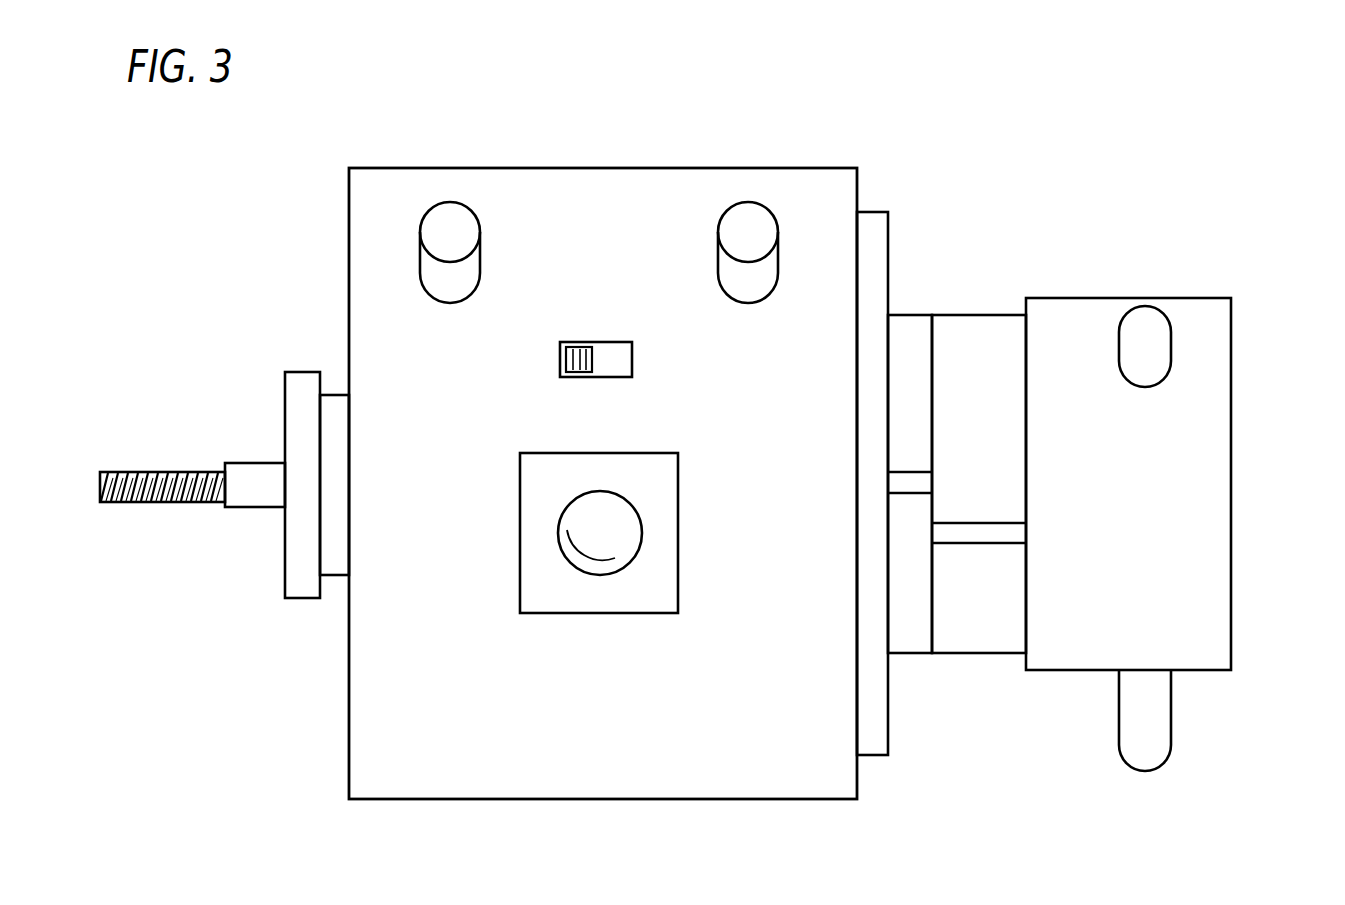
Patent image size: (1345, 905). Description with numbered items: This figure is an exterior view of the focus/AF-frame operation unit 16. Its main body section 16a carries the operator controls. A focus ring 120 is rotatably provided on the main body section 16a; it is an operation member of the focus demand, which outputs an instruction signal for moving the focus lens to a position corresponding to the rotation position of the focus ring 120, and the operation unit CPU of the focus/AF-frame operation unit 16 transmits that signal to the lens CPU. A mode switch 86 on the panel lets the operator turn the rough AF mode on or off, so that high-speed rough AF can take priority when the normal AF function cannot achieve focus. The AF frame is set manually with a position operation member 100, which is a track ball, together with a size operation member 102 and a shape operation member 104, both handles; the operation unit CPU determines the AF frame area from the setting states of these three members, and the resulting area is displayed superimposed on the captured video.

The focus/AF-frame operation unit 16 is at (1019, 163).
The main body section 16a is at (597, 168).
The mode switch 86 is at (585, 346).
The position operation member 100 is at (570, 510).
The size operation member 102 is at (465, 222).
The shape operation member 104 is at (733, 222).
The focus ring 120 is at (1217, 444).